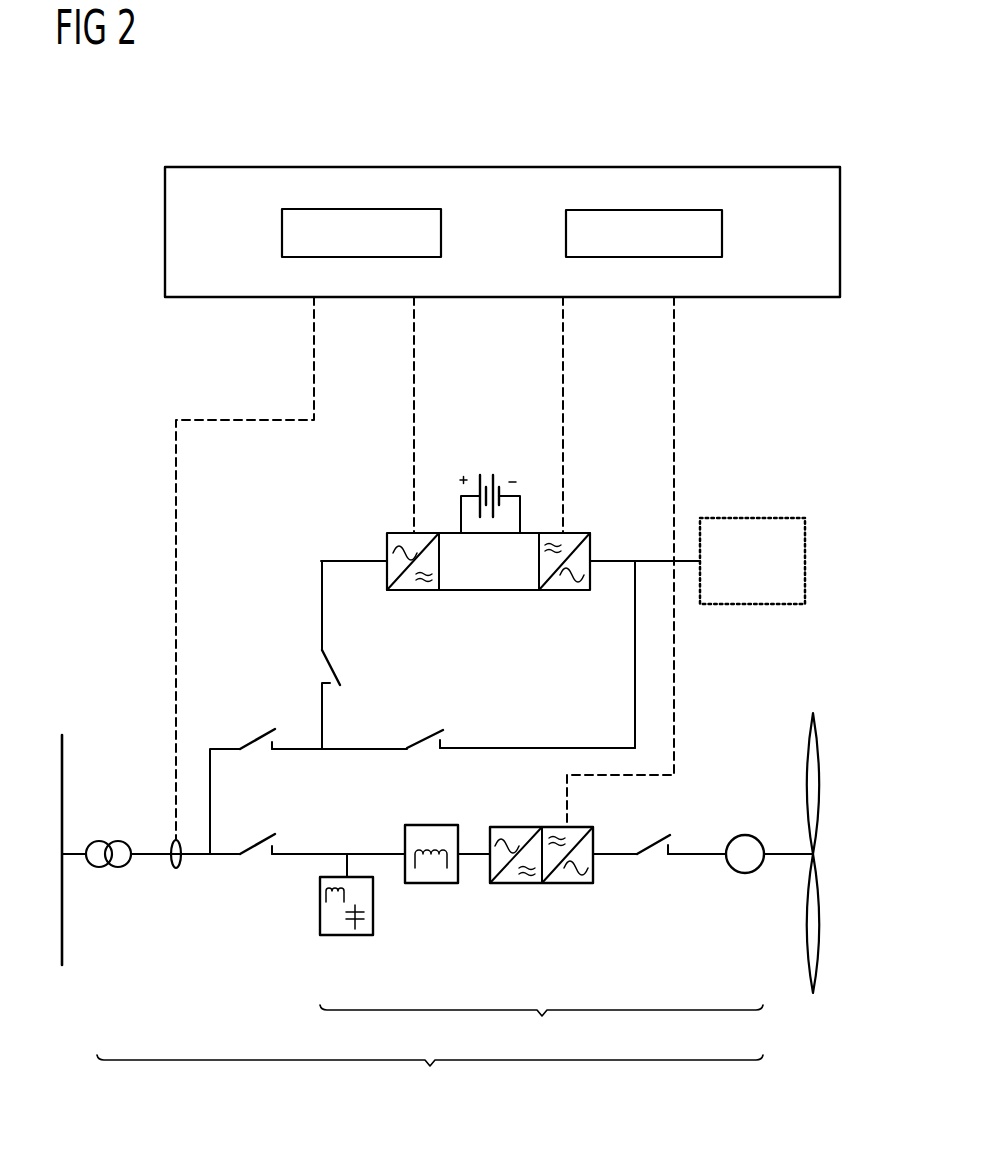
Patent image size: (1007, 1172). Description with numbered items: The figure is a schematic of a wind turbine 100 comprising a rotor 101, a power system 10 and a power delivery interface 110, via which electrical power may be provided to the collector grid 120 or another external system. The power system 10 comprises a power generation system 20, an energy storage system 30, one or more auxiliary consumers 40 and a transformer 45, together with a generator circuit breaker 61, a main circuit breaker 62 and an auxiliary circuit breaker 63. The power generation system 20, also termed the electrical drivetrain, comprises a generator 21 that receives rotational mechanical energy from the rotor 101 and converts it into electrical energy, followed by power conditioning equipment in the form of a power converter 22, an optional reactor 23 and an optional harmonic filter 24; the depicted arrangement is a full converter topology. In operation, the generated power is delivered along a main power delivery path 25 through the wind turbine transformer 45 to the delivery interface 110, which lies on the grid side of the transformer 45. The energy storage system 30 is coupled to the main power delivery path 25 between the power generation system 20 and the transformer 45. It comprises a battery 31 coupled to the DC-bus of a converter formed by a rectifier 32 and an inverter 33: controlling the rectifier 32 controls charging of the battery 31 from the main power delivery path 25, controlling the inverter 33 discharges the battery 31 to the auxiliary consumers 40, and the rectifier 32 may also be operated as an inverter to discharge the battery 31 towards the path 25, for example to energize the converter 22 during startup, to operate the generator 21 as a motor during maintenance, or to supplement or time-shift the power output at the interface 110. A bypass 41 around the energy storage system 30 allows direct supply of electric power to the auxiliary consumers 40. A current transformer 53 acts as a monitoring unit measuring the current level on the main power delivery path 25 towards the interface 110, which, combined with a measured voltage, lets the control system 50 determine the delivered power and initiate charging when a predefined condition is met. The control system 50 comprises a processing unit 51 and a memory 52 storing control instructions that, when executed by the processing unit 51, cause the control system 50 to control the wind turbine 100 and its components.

The wind turbine 100 is at (793, 109).
The control system 50 is at (495, 165).
The processing unit 51 is at (282, 228).
The memory 52 is at (722, 228).
The energy storage system 30 is at (488, 516).
The battery 31 is at (503, 480).
The rectifier 32 is at (410, 595).
The inverter 33 is at (563, 595).
The auxiliary consumers 40 is at (755, 517).
The bypass 41 is at (500, 746).
The auxiliary circuit breaker 63 is at (250, 745).
The main circuit breaker 62 is at (262, 858).
The generator circuit breaker 61 is at (655, 858).
The collector grid 120 is at (98, 826).
The power delivery interface 110 is at (63, 853).
The transformer 45 is at (118, 868).
The current transformer 53 is at (176, 870).
The main power delivery path 25 is at (225, 858).
The harmonic filter 24 is at (347, 938).
The reactor 23 is at (432, 886).
The power converter 22 is at (565, 886).
The generator 21 is at (745, 875).
The rotor 101 is at (810, 782).
The power generation system 20 is at (541, 1028).
The power system 10 is at (430, 1078).